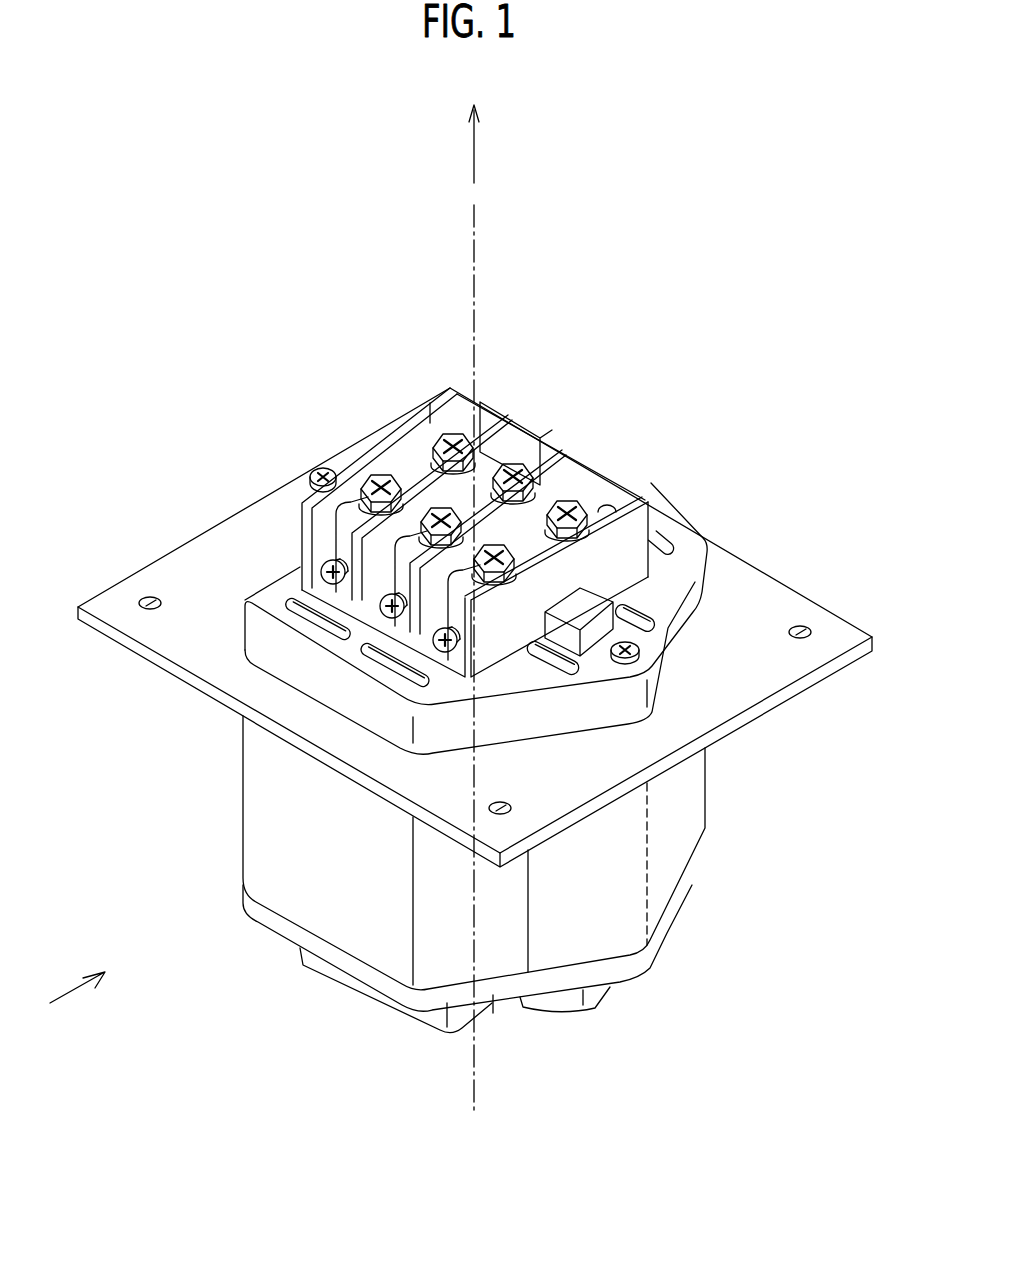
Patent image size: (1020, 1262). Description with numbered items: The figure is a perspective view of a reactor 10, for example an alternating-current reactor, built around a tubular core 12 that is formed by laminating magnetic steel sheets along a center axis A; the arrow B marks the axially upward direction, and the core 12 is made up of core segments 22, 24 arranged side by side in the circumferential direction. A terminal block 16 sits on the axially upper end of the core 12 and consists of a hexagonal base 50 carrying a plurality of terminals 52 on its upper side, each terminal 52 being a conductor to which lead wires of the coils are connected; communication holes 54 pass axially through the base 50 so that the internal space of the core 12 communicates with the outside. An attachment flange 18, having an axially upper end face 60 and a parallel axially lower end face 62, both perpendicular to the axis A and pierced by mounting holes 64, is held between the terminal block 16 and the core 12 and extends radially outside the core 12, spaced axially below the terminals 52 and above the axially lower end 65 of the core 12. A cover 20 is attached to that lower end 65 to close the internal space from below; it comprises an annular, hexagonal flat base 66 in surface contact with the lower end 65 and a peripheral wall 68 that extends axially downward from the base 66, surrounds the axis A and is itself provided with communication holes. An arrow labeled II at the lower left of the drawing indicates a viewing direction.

The reactor 10 is at (860, 171).
The core 12 is at (230, 815).
The terminal block 16 is at (400, 446).
The attachment flange 18 is at (785, 576).
The cover 20 is at (290, 940).
The core segment 22 is at (284, 846).
The core segment 24 is at (670, 848).
The base 50 is at (277, 556).
The terminal 52 is at (437, 446).
The communication hole 54 is at (300, 602).
The axially upper end face 60 is at (732, 576).
The axially lower end face 62 is at (820, 682).
The mounting hole 64 is at (151, 600).
The axially lower end 65 is at (283, 912).
The base 66 is at (668, 933).
The peripheral wall 68 is at (561, 1005).
The center axis A is at (476, 266).
The arrow B is at (476, 155).
The view direction II is at (77, 1001).